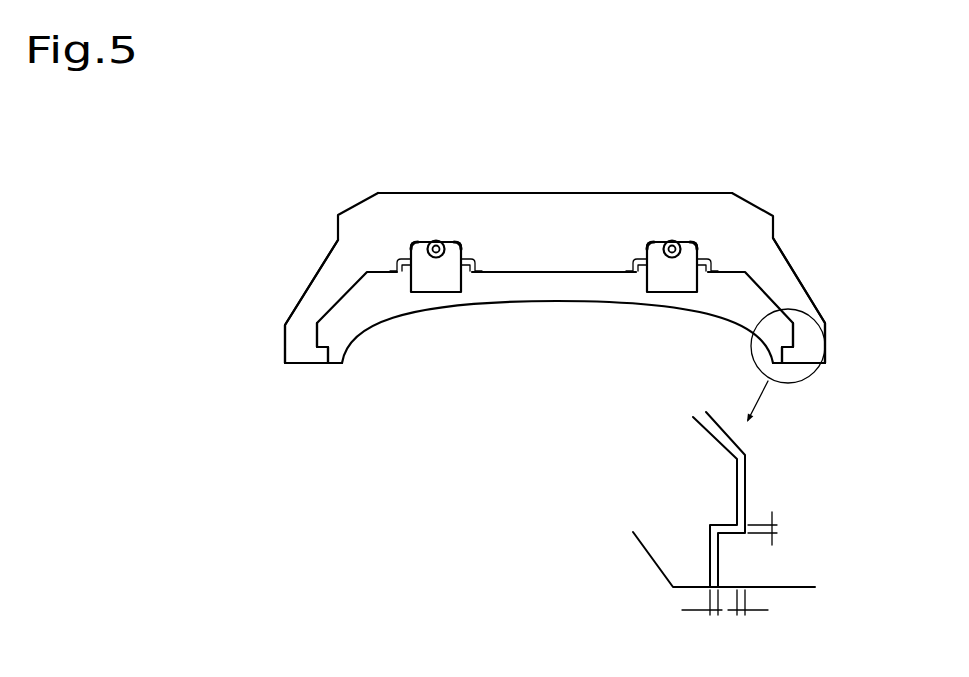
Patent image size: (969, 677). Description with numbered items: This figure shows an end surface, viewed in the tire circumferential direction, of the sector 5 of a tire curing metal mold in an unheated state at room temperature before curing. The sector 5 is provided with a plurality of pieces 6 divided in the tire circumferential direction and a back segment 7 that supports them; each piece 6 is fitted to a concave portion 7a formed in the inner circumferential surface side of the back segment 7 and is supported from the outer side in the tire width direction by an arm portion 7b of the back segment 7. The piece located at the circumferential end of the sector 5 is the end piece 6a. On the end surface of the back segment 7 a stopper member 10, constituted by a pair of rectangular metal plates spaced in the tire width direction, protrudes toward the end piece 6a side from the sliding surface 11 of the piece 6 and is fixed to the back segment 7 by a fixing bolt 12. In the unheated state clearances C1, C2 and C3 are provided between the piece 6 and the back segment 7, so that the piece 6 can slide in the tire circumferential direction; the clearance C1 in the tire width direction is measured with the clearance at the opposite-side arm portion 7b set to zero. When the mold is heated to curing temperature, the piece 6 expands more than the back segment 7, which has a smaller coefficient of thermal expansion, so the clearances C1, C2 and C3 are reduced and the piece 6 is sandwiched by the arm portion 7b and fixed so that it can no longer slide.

The sector 5 is at (553, 293).
The piece 6 is at (555, 332).
The end piece 6a is at (586, 304).
The back segment 7 is at (553, 259).
The concave portion 7a is at (603, 271).
The arm portion 7b is at (297, 324).
The stopper member 10 is at (437, 284).
The sliding surface 11 is at (510, 273).
The fixing bolt 12 is at (436, 240).
The clearance in the tire width direction C1 is at (722, 617).
The clearance C2 is at (772, 525).
The clearance C3 is at (720, 398).